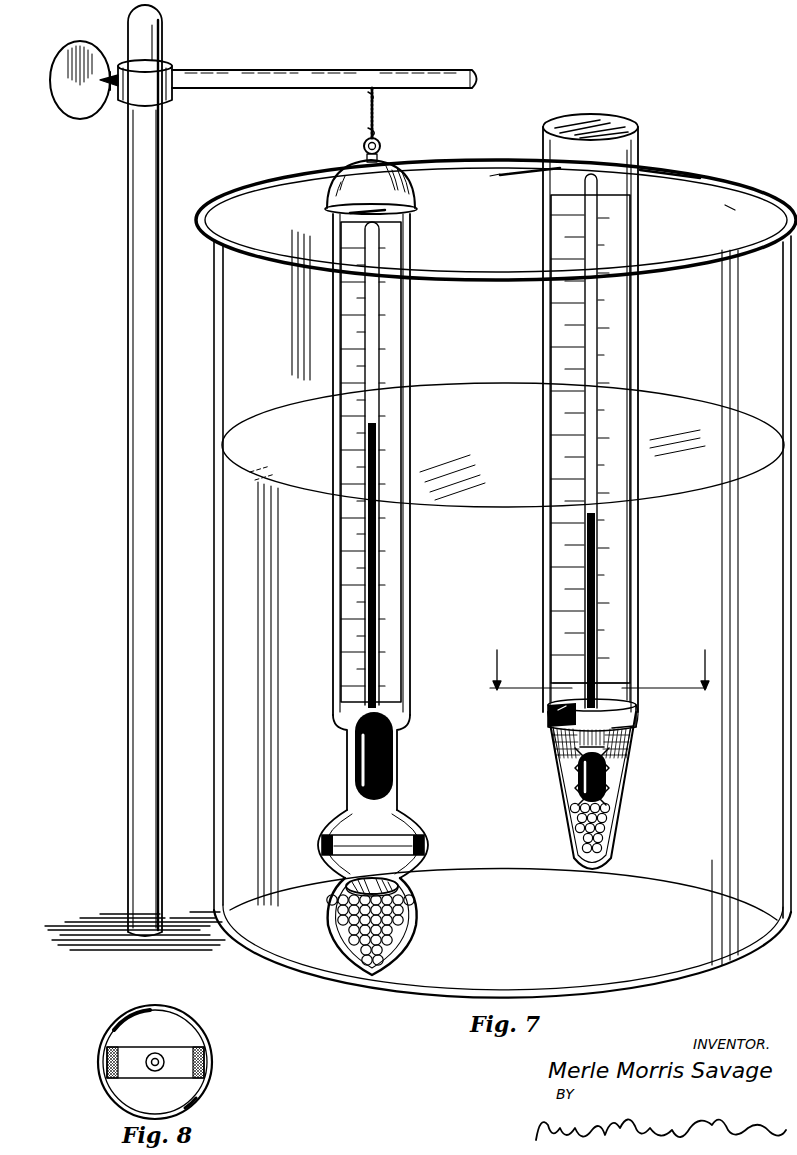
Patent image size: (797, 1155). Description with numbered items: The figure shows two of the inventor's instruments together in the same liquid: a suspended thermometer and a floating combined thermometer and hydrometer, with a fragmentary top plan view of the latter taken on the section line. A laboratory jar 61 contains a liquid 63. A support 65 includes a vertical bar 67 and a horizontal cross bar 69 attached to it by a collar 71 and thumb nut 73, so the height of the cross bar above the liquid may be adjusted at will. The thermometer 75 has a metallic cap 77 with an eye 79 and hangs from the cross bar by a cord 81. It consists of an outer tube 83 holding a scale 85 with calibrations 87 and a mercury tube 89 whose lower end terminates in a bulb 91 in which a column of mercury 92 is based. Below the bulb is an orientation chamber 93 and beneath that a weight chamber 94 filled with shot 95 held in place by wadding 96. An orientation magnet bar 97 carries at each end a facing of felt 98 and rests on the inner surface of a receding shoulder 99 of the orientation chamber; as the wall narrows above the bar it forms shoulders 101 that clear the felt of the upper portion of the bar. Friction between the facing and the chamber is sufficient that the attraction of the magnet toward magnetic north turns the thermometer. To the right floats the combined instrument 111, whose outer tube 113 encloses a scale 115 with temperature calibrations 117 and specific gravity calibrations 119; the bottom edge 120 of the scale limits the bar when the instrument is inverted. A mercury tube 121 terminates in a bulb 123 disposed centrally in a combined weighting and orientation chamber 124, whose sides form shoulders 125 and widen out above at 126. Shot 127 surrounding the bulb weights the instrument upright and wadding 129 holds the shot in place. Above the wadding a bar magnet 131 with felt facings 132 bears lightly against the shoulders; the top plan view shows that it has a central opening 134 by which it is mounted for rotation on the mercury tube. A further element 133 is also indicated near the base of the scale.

In FIG. 7, the laboratory jar 61 is at (212, 584).
In FIG. 7, the liquid 63 is at (703, 584).
In FIG. 7, the support 65 is at (122, 409).
In FIG. 7, the vertical bar 67 is at (127, 251).
In FIG. 7, the cross bar 69 is at (243, 69).
In FIG. 7, the collar 71 is at (167, 58).
In FIG. 7, the thumb nut 73 is at (80, 42).
In FIG. 7, the thermometer 75 is at (418, 224).
In FIG. 7, the metallic cap 77 is at (414, 185).
In FIG. 7, the eye 79 is at (382, 147).
In FIG. 7, the cord 81 is at (377, 116).
In FIG. 7, the outer tube 83 is at (411, 358).
In FIG. 7, the scale 85 is at (403, 334).
In FIG. 7, the calibrations 87 is at (371, 287).
In FIG. 7, the mercury tube 89 is at (381, 534).
In FIG. 7, the bulb 91 is at (395, 743).
In FIG. 7, the column of mercury 92 is at (373, 669).
In FIG. 7, the orientation chamber 93 is at (407, 822).
In FIG. 7, the weight chamber 94 is at (399, 961).
In FIG. 7, the shot 95 is at (407, 938).
In FIG. 7, the wadding 96 is at (400, 891).
In FIG. 7, the magnet bar 97 is at (401, 838).
In FIG. 7, the felt facing 98 is at (325, 840).
In FIG. 7, the shoulder 99 is at (428, 860).
In FIG. 7, the shoulders 101 is at (425, 837).
In FIG. 7, the combined instrument 111 is at (636, 117).
In FIG. 7, the outer tube 113 is at (640, 151).
In FIG. 7, the scale 115 is at (626, 236).
In FIG. 7, the temperature calibrations 117 is at (626, 216).
In FIG. 7, the specific gravity calibrations 119 is at (578, 350).
In FIG. 7, the bottom edge of scale 120 is at (577, 687).
In FIG. 7, the mercury tube 121 is at (599, 294).
In FIG. 8, the mercury tube 121 is at (165, 1065).
In FIG. 7, the bulb 123 is at (588, 790).
In FIG. 7, the combined weighting and orientation chamber 124 is at (558, 814).
In FIG. 8, the combined weighting and orientation chamber 124 is at (106, 1096).
In FIG. 7, the shoulders 125 is at (633, 733).
In FIG. 7, the widened portion 126 is at (621, 710).
In FIG. 7, the shot 127 is at (617, 834).
In FIG. 7, the wadding 129 is at (556, 736).
In FIG. 8, the wadding 129 is at (120, 1024).
In FIG. 7, the bar magnet 131 is at (601, 706).
In FIG. 7, the facings 132 is at (560, 712).
In FIG. 8, the facings 132 is at (194, 1055).
In FIG. 7, the scale bottom bar 133 is at (603, 681).
In FIG. 7, the central opening 134 is at (635, 742).
In FIG. 8, the central opening 134 is at (145, 1061).